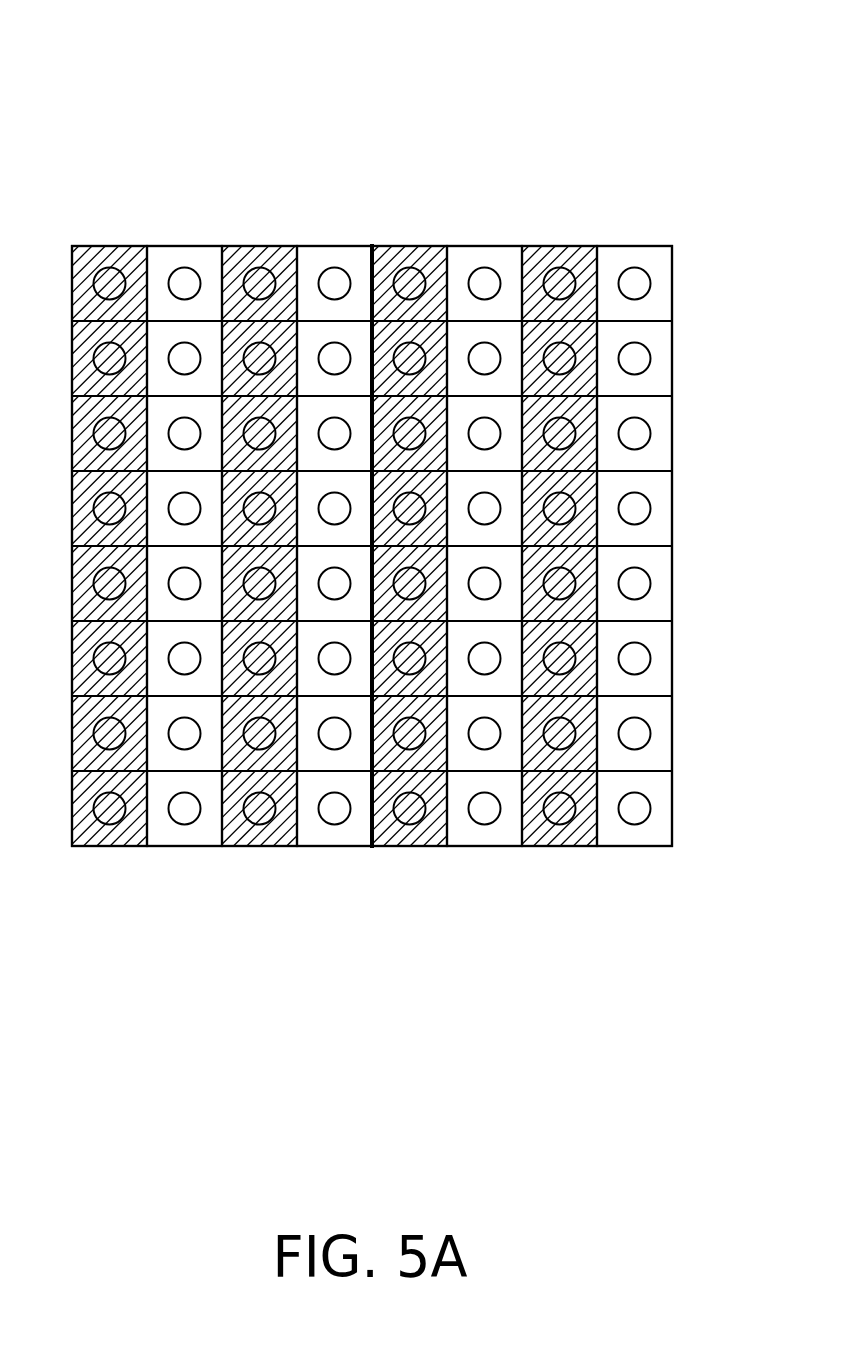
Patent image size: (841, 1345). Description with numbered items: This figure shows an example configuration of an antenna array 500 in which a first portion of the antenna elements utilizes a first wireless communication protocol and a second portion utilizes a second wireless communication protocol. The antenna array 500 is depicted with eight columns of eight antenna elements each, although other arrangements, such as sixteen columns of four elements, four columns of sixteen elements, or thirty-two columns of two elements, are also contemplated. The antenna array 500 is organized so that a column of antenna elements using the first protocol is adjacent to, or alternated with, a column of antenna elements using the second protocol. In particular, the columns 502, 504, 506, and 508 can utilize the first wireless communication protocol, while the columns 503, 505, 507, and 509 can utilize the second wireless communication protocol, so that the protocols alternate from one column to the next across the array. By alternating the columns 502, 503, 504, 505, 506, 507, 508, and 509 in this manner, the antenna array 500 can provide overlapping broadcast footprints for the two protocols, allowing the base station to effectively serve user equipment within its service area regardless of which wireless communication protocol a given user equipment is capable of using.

The antenna array 500 is at (687, 48).
The column 502 is at (110, 222).
The column 503 is at (185, 222).
The column 504 is at (260, 222).
The column 505 is at (335, 222).
The column 506 is at (410, 222).
The column 507 is at (485, 222).
The column 508 is at (560, 222).
The column 509 is at (635, 222).